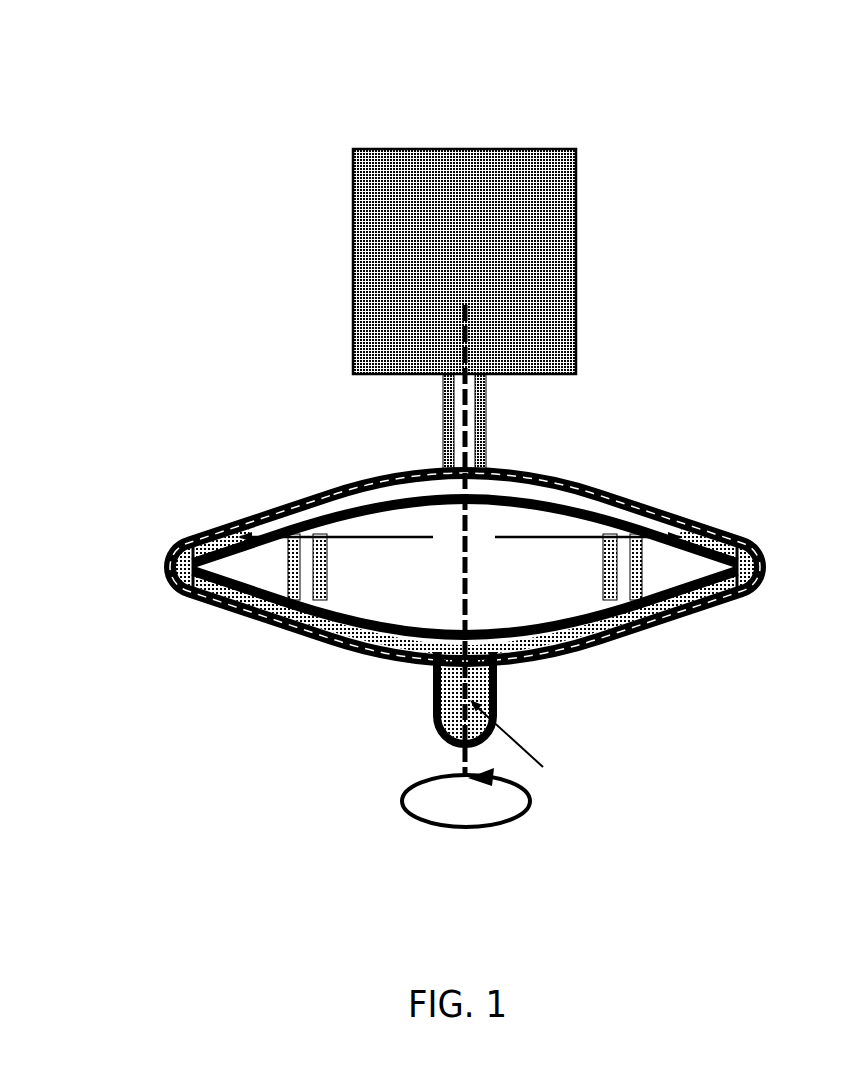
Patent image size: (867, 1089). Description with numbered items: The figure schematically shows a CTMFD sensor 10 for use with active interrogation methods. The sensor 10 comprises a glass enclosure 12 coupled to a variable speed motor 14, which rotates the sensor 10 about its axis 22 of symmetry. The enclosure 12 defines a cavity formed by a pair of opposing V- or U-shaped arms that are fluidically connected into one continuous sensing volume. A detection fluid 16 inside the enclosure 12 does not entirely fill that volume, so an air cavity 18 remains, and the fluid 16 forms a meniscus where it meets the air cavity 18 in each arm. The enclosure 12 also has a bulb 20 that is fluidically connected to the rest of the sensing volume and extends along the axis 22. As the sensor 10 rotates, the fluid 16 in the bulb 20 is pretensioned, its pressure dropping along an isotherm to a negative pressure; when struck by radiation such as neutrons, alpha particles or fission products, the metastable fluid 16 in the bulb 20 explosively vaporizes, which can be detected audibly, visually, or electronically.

The CTMFD sensor 10 is at (210, 143).
The glass enclosure 12 is at (355, 491).
The variable speed motor 14 is at (580, 263).
The detection fluid 16 is at (749, 558).
The air cavity 18 is at (613, 491).
The bulb 20 is at (423, 737).
The axis 22 is at (460, 594).